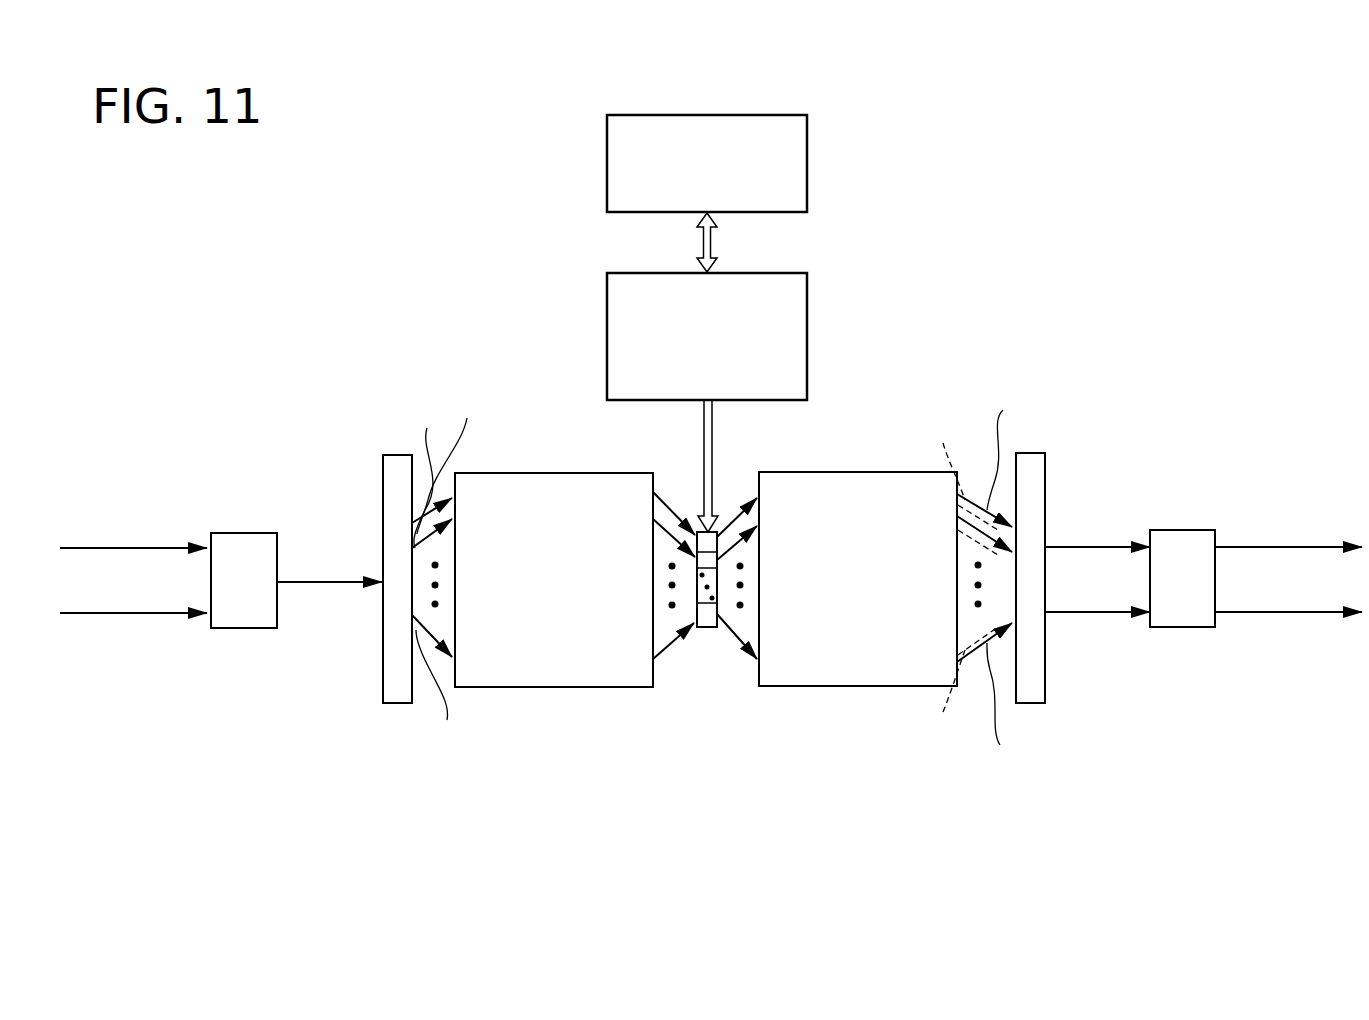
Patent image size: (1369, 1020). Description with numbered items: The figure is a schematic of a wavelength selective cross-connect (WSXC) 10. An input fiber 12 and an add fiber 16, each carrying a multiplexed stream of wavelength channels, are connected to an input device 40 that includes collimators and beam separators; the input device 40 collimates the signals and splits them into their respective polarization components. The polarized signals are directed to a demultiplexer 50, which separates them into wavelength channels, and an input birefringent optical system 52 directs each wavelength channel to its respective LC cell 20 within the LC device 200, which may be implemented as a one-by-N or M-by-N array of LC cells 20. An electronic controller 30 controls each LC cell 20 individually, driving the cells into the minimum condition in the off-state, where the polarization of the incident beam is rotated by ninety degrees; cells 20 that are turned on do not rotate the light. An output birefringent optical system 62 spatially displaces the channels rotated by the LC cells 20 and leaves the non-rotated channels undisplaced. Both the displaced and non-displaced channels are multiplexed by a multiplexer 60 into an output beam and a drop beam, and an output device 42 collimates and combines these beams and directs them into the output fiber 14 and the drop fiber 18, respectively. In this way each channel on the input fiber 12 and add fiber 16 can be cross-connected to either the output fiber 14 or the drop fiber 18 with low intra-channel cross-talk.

The wavelength selective cross-connect 10 is at (1068, 255).
The input fiber 12 is at (184, 548).
The output fiber 14 is at (1327, 547).
The add fiber 16 is at (186, 615).
The drop fiber 18 is at (1332, 612).
The LC cell 20 is at (736, 573).
The electronic controller 30 is at (707, 336).
The input device 40 is at (248, 626).
The output device 42 is at (1186, 627).
The demultiplexer 50 is at (398, 703).
The input birefringent optical system 52 is at (578, 672).
The multiplexer 60 is at (1033, 692).
The output birefringent optical system 62 is at (838, 672).
The LC device 200 is at (710, 618).